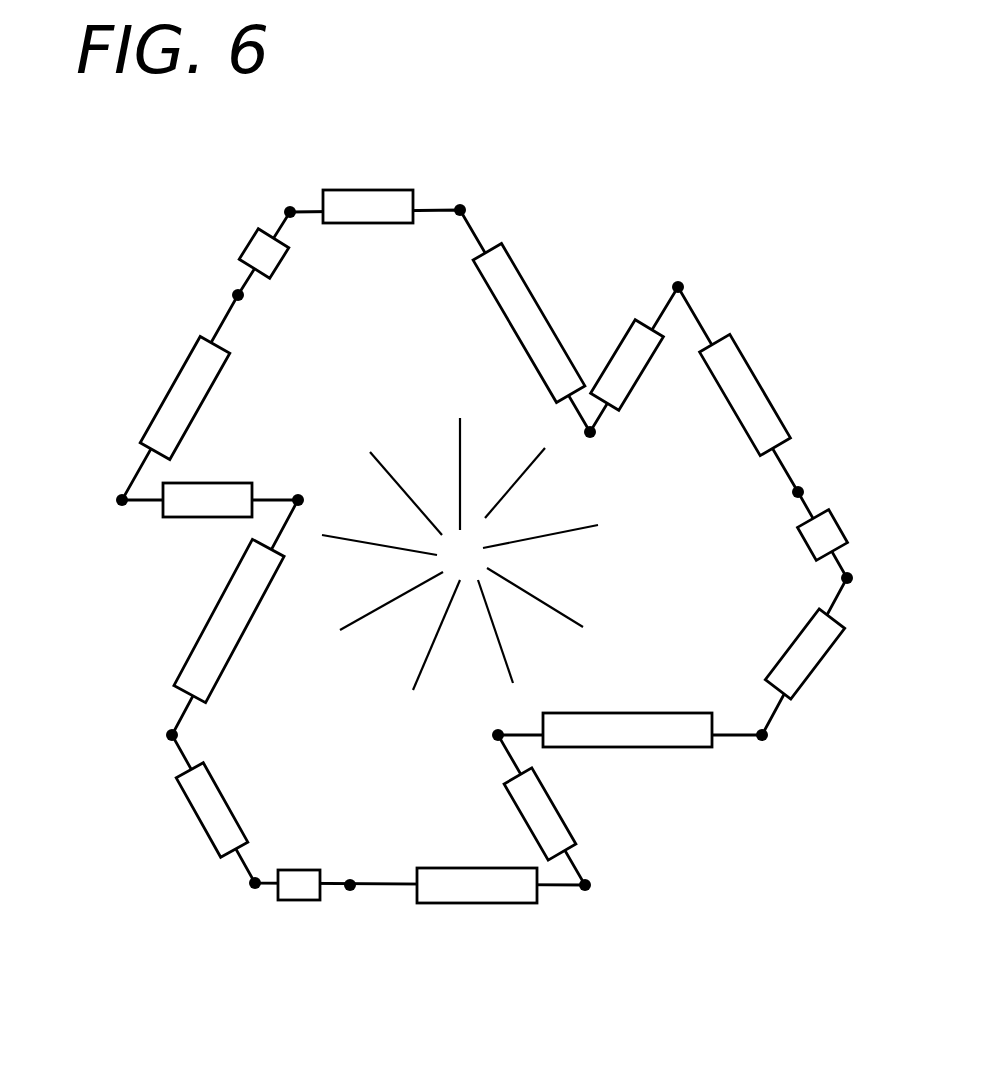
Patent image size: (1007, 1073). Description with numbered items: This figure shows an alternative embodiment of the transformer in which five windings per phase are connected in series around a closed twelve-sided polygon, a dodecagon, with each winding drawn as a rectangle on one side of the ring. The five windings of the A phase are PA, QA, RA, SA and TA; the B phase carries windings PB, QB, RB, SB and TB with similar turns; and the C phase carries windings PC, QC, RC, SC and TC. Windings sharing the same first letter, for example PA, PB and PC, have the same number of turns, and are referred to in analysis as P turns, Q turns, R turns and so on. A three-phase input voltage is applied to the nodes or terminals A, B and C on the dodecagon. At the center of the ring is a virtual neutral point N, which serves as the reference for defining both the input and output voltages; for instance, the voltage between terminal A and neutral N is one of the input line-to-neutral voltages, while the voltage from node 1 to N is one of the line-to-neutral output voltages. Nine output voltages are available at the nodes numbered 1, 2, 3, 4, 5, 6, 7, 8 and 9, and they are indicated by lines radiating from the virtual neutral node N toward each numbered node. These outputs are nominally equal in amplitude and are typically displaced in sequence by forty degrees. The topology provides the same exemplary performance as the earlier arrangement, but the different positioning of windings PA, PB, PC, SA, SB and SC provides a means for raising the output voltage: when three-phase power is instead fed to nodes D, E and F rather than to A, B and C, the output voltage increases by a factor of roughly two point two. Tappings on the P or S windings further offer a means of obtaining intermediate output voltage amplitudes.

The winding TA is at (382, 190).
The winding PA is at (606, 747).
The winding SA is at (212, 483).
The winding QA is at (480, 903).
The winding RA is at (305, 900).
The winding RB is at (255, 246).
The winding RC is at (838, 530).
The winding PC is at (508, 258).
The winding SB is at (640, 372).
The winding QC is at (752, 366).
The winding TB is at (822, 660).
The winding SC is at (515, 815).
The winding TC is at (180, 790).
The winding PB is at (215, 598).
The winding QB is at (170, 392).
The input node A is at (290, 212).
The input node B is at (847, 578).
The input node C is at (255, 883).
The alternative input node D is at (590, 432).
The alternative input node E is at (482, 737).
The alternative input node F is at (298, 500).
The output node 1 is at (460, 210).
The output node 2 is at (678, 287).
The output node 3 is at (798, 492).
The output node 4 is at (762, 735).
The output node 5 is at (585, 885).
The output node 6 is at (350, 885).
The output node 7 is at (172, 735).
The output node 8 is at (122, 500).
The output node 9 is at (238, 295).
The virtual neutral point N is at (460, 554).